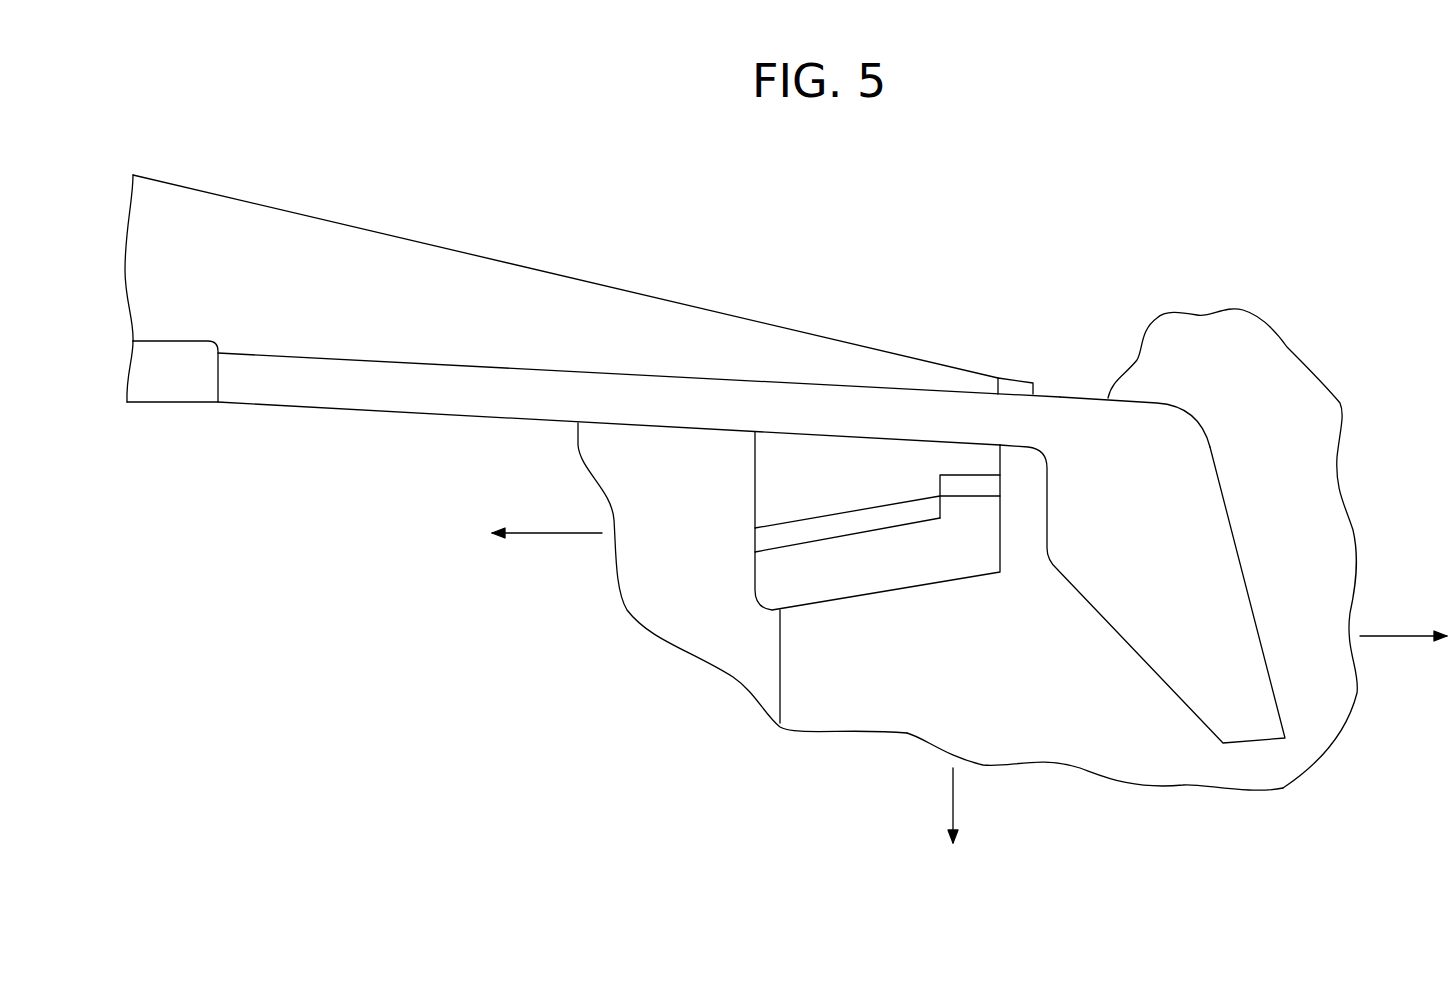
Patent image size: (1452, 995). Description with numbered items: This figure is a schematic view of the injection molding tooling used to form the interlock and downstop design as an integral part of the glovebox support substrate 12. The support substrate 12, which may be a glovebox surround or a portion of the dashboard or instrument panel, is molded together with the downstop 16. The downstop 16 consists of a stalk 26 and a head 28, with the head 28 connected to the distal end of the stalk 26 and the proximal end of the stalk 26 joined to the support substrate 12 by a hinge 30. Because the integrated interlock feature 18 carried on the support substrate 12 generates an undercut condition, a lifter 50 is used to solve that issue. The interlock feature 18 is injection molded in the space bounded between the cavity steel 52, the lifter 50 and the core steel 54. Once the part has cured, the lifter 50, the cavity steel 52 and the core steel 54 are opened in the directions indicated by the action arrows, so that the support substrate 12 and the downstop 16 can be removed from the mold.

The support substrate 12 is at (327, 232).
The downstop 16 is at (1060, 397).
The interlock feature 18 is at (865, 562).
The stalk 26 is at (642, 402).
The head 28 is at (1161, 514).
The hinge 30 is at (218, 380).
The lifter 50 is at (1012, 720).
The cavity steel 52 is at (658, 577).
The core steel 54 is at (1317, 598).